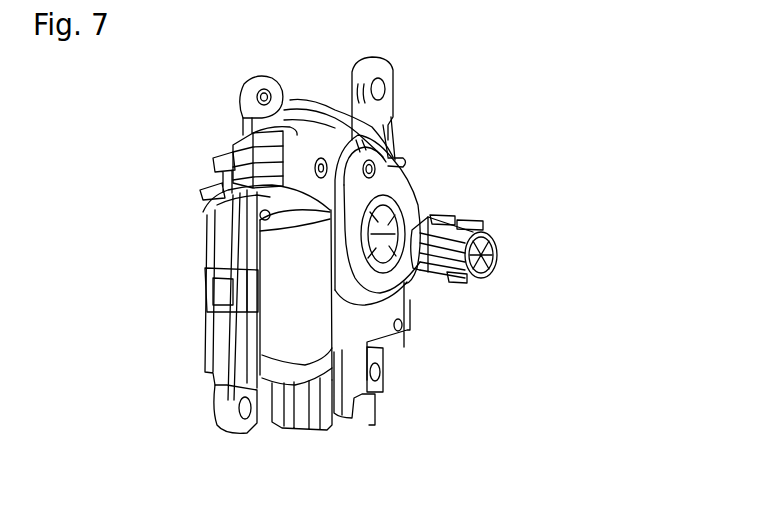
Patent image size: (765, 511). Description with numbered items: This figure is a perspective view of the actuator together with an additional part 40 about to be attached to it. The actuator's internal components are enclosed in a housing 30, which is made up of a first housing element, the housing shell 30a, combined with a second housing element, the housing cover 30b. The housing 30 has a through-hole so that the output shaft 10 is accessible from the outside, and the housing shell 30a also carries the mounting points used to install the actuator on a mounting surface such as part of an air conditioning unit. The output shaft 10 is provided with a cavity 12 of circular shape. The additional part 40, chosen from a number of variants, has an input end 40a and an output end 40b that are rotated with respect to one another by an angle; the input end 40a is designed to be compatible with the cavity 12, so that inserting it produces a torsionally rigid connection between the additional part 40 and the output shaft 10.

The housing 30 is at (167, 170).
The housing shell 30a is at (220, 312).
The housing cover 30b is at (240, 365).
The output shaft 10 is at (388, 262).
The cavity 12 is at (385, 228).
The additional part 40 is at (528, 248).
The input end 40a is at (448, 217).
The output end 40b is at (477, 282).